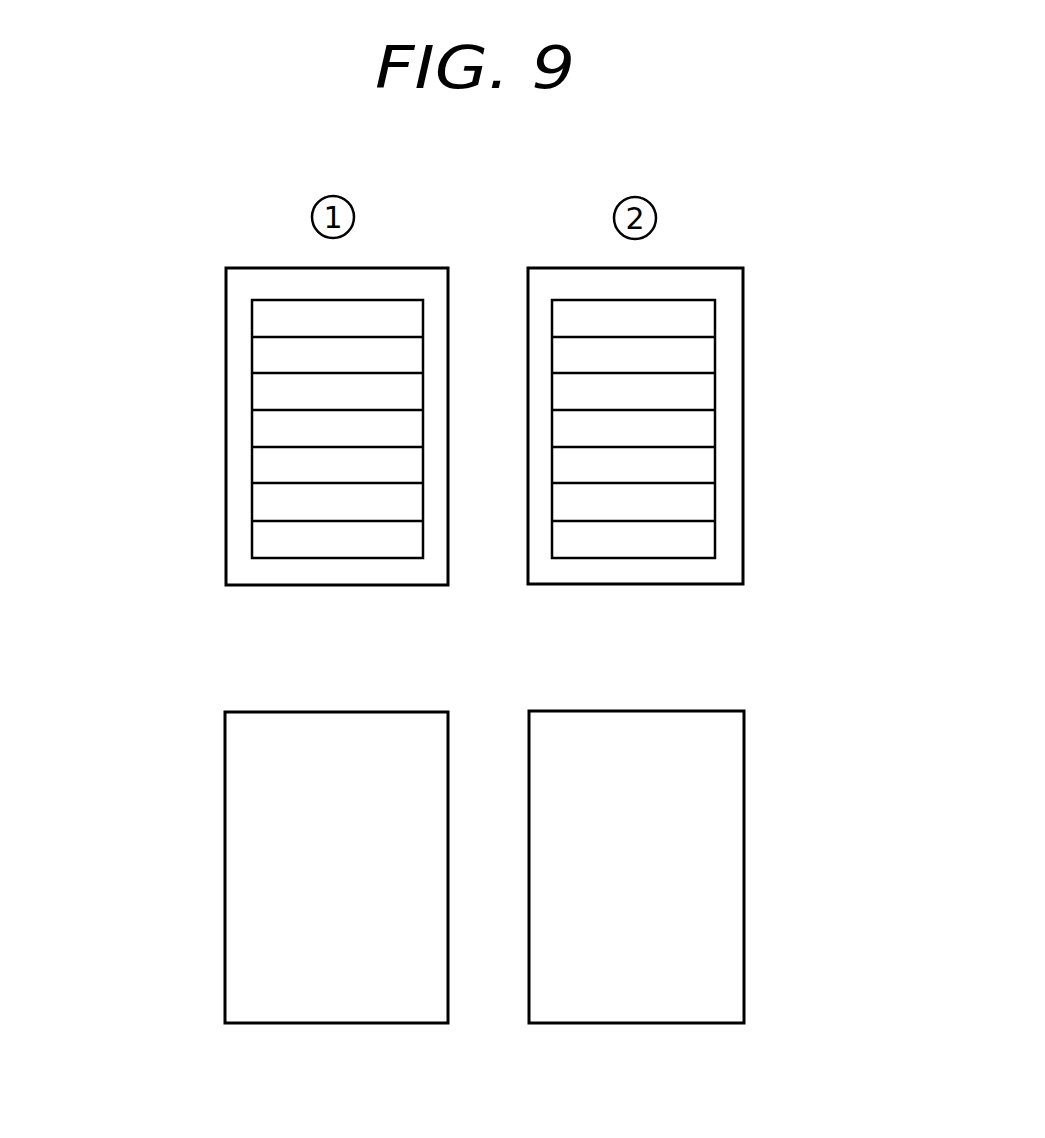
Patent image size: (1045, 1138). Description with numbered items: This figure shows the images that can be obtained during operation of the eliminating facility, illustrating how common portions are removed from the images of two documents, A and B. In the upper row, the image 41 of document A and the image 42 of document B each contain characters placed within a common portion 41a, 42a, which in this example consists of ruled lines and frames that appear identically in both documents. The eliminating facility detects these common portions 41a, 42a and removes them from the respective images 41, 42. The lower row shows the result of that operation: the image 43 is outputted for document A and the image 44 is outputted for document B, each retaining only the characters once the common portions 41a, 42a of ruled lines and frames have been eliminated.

The image of document A 41 is at (224, 413).
The common portion of image of document A 41a is at (254, 506).
The image of document B 42 is at (743, 395).
The common portion of image of document B 42a is at (715, 467).
The output image of document A 43 is at (224, 860).
The output image of document B 44 is at (744, 873).